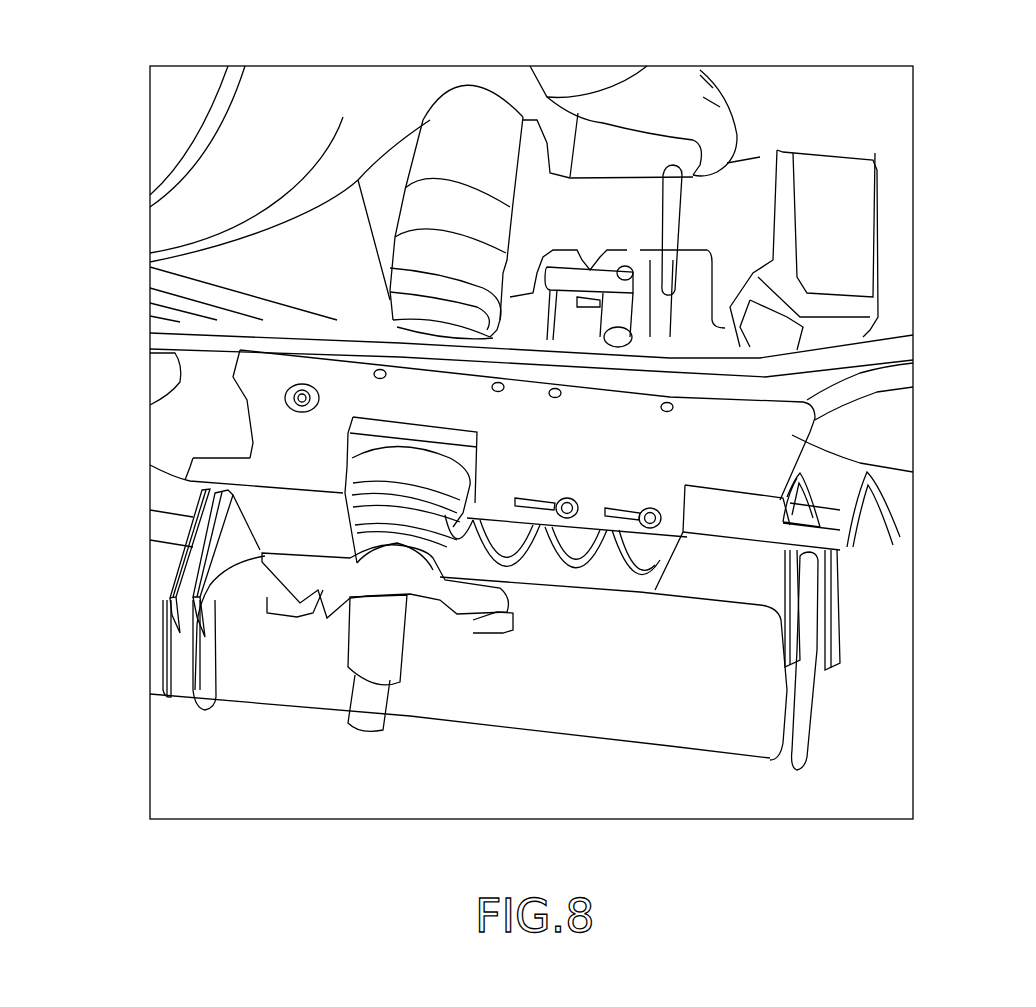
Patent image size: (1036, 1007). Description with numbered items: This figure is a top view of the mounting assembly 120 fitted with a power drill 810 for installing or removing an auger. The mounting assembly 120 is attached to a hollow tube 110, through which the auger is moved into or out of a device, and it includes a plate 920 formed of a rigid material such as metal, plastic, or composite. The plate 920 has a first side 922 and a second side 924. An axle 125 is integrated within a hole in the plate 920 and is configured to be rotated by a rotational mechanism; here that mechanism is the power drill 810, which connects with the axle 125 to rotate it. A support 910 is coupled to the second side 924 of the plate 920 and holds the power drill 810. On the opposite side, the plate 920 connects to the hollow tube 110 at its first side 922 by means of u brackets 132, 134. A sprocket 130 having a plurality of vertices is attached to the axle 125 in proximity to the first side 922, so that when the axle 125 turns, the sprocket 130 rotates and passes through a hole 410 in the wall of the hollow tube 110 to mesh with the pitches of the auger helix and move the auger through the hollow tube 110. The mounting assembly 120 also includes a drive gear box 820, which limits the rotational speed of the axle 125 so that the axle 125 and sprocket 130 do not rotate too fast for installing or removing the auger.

The hollow tube 110 is at (640, 733).
The mounting assembly 120 is at (803, 430).
The axle 125 is at (363, 730).
The sprocket 130 is at (320, 610).
The u bracket 132 is at (185, 698).
The u bracket 134 is at (793, 760).
The hole 410 is at (488, 637).
The power drill 810 is at (423, 137).
The drive gear box 820 is at (367, 473).
The support 910 is at (685, 263).
The plate 920 is at (297, 373).
The first side 922 is at (913, 472).
The second side 924 is at (913, 360).